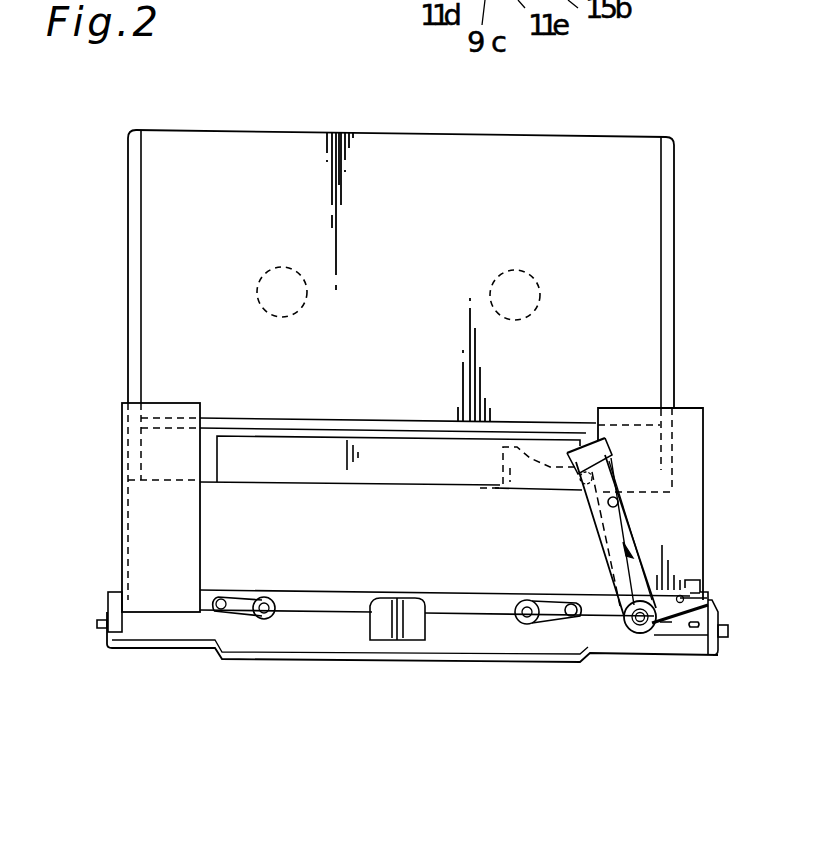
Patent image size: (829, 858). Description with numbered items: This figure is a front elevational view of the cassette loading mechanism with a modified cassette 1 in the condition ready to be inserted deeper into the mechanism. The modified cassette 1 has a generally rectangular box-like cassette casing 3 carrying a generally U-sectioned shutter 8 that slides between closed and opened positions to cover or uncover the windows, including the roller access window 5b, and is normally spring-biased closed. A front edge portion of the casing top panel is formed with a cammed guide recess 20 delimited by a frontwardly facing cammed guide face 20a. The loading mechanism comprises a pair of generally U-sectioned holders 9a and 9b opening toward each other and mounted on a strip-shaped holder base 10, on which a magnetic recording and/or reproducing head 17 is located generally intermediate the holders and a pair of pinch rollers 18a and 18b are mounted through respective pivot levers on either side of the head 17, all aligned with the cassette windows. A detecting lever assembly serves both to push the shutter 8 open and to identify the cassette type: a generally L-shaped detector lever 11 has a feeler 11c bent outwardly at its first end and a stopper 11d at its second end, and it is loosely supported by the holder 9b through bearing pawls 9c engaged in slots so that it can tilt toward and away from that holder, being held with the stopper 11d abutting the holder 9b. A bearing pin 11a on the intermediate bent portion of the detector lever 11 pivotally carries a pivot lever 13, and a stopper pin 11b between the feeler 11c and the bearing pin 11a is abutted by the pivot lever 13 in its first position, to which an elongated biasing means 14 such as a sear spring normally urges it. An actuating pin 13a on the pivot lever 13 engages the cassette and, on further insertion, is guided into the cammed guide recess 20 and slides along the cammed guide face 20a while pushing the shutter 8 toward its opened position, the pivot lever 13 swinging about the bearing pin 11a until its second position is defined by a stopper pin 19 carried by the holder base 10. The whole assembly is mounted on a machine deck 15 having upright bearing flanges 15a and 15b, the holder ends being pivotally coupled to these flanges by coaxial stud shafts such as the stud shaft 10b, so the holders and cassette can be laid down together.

The modified cassette 1 is at (228, 130).
The cassette casing 3 is at (410, 197).
The roller access window 5b is at (553, 491).
The shutter 8 is at (300, 453).
The holder 9a is at (147, 528).
The holder 9b is at (688, 440).
The bearing pawls 9c is at (692, 628).
The holder base 10 is at (100, 625).
The stud shaft 10b is at (730, 631).
The detector lever 11 is at (625, 541).
The bearing pin 11a is at (641, 634).
The stopper pin 11b is at (620, 499).
The feeler 11c is at (587, 446).
The stopper 11d is at (700, 576).
The pivot lever 13 is at (604, 596).
The actuating pin 13a is at (606, 468).
The biasing means 14 is at (626, 634).
The machine deck 15 is at (188, 648).
The bearing flange 15a is at (120, 650).
The bearing flange 15b is at (712, 657).
The magnetic recording and/or reproducing head 17 is at (395, 632).
The pinch roller 18a is at (525, 625).
The pinch roller 18b is at (263, 620).
The stopper pin 19 is at (570, 620).
The cammed guide recess 20 is at (522, 440).
The cammed guide face 20a is at (555, 430).